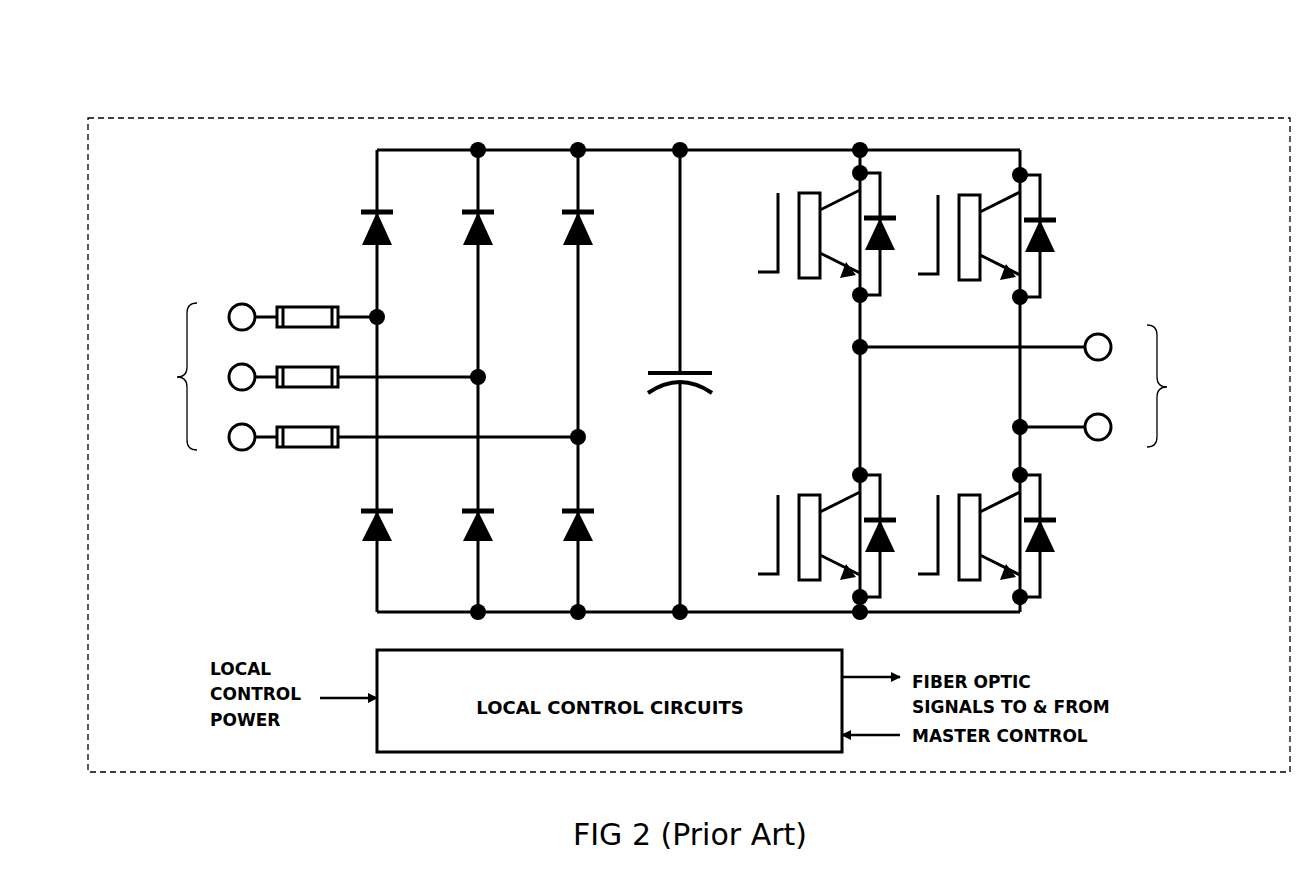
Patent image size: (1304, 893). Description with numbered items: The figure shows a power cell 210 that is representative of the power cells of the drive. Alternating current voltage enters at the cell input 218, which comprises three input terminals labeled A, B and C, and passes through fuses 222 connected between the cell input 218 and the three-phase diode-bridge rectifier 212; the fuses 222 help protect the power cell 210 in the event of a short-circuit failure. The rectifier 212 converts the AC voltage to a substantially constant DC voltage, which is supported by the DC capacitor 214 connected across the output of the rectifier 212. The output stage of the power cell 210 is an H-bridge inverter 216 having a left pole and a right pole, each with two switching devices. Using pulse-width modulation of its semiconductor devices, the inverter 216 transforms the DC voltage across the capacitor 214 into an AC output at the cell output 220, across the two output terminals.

The power cell 210 is at (205, 118).
The three-phase diode-bridge rectifier 212 is at (592, 92).
The direct current (DC) capacitor 214 is at (647, 92).
The H-bridge inverter 216 is at (1043, 100).
The cell input 218 is at (189, 378).
The cell output 220 is at (1061, 386).
The fuses 222 is at (303, 448).